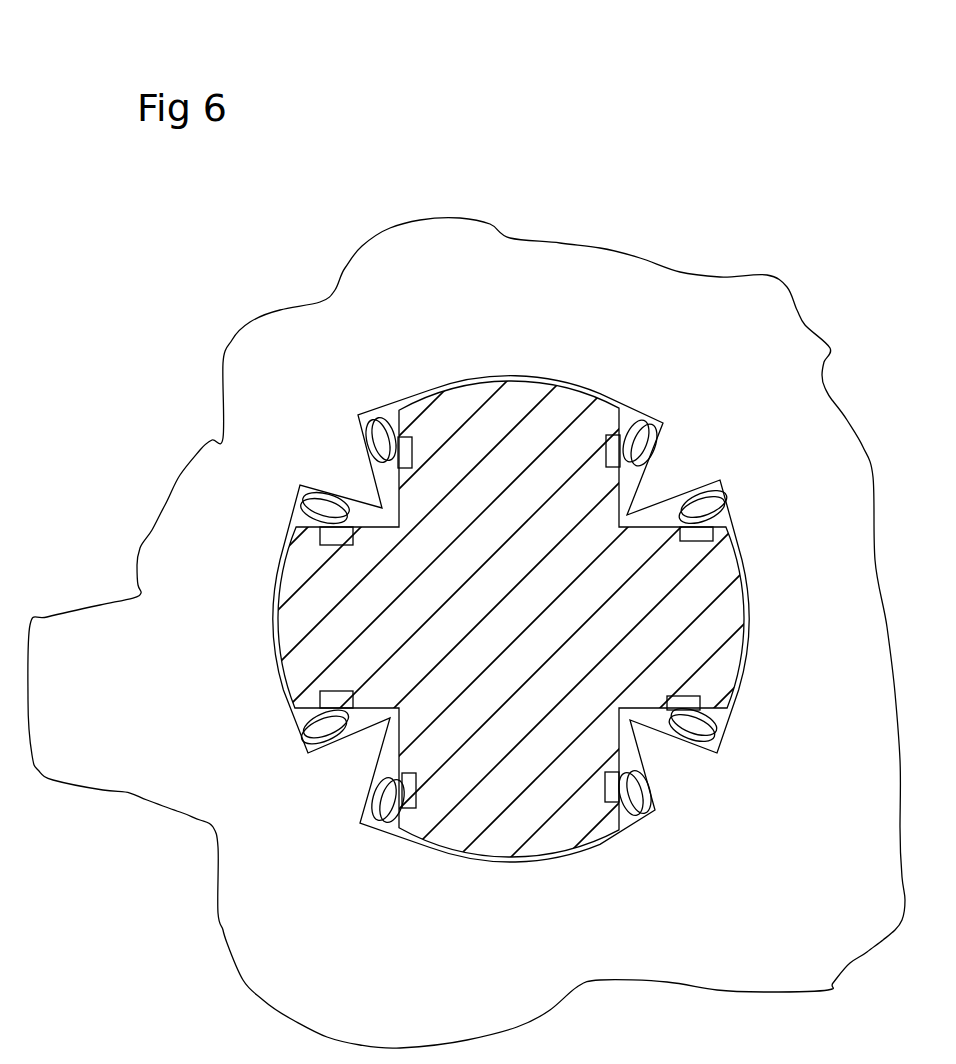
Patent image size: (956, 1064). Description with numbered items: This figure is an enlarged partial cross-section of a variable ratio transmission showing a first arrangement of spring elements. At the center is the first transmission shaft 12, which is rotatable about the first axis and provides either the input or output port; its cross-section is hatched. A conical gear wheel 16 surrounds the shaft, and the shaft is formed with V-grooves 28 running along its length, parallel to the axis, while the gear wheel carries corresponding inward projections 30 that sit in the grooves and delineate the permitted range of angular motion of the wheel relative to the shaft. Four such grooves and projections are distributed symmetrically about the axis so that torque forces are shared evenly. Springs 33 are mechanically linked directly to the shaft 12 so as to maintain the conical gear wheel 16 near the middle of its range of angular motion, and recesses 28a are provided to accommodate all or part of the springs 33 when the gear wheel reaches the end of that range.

The conical gear wheel 16 is at (635, 315).
The first transmission shaft 12 is at (522, 482).
The V-groove 28 is at (617, 753).
The recess 28a is at (320, 693).
The inward projection 30 is at (673, 773).
The spring 33 is at (382, 830).